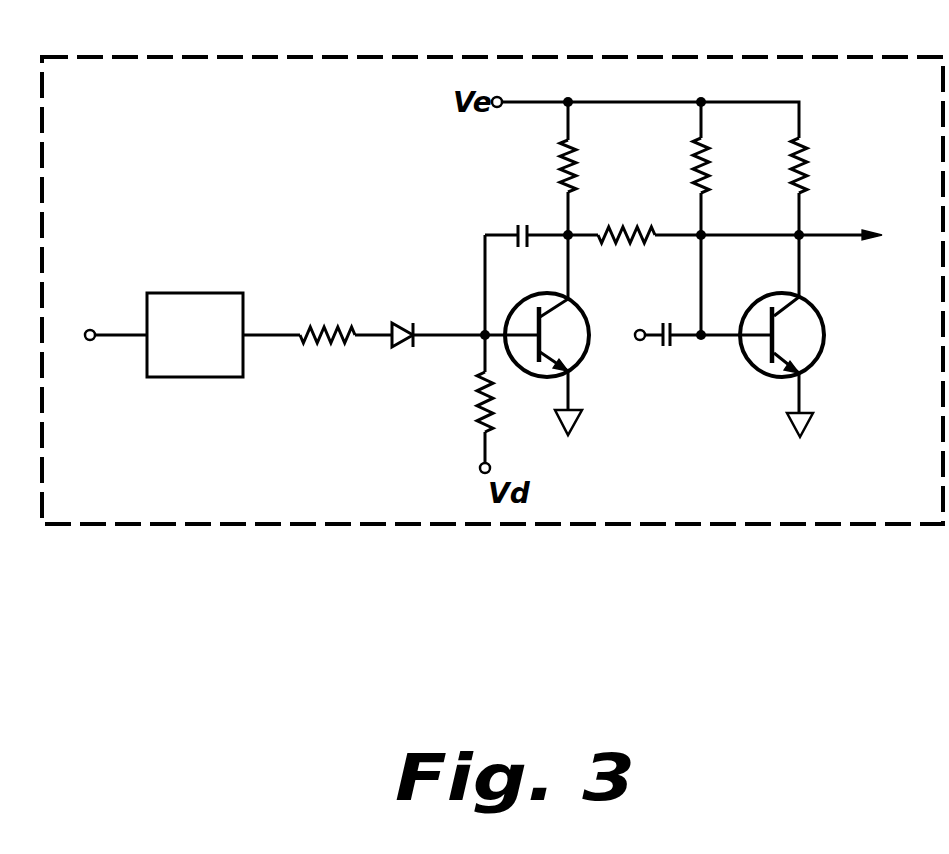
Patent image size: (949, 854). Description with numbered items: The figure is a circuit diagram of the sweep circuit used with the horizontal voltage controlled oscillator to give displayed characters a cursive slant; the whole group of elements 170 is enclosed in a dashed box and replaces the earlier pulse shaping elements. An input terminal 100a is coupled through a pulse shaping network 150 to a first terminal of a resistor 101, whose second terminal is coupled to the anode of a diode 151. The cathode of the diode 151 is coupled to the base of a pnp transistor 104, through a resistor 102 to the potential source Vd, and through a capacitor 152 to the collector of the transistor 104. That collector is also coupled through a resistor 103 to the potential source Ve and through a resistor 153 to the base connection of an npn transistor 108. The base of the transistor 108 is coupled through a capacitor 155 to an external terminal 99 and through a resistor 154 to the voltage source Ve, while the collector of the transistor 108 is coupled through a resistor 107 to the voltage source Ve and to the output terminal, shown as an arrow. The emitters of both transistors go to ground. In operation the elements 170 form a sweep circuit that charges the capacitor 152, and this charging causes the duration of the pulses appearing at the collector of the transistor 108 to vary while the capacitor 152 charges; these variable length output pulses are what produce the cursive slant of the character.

The group of elements 170 is at (367, 57).
The input terminal 100a is at (100, 318).
The pulse shaping network 150 is at (192, 258).
The resistor 101 is at (312, 328).
The diode 151 is at (396, 324).
The capacitor 152 is at (517, 228).
The resistor 103 is at (563, 148).
The resistor 154 is at (697, 152).
The resistor 107 is at (808, 160).
The resistor 153 is at (636, 245).
The pnp transistor 104 is at (590, 322).
The input terminal 99 is at (640, 340).
The capacitor 155 is at (674, 345).
The npn transistor 108 is at (826, 325).
The resistor 102 is at (478, 395).